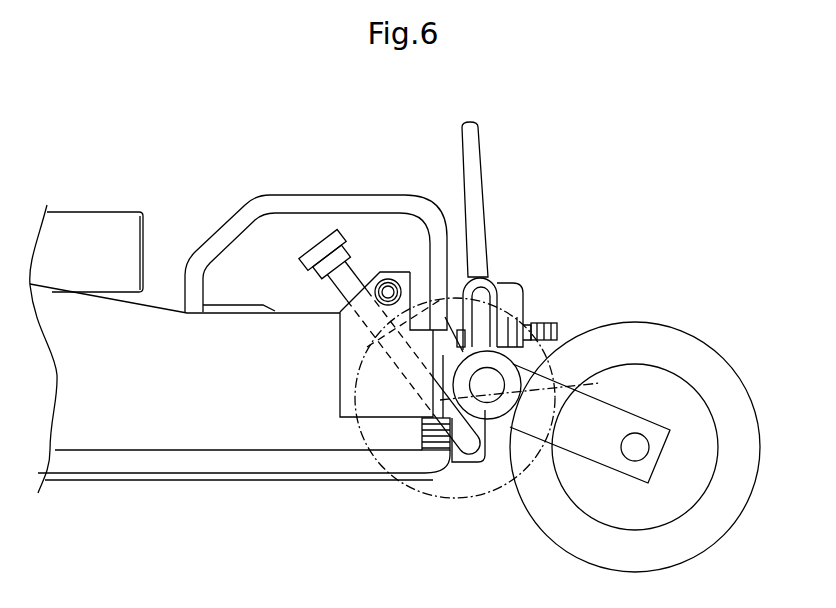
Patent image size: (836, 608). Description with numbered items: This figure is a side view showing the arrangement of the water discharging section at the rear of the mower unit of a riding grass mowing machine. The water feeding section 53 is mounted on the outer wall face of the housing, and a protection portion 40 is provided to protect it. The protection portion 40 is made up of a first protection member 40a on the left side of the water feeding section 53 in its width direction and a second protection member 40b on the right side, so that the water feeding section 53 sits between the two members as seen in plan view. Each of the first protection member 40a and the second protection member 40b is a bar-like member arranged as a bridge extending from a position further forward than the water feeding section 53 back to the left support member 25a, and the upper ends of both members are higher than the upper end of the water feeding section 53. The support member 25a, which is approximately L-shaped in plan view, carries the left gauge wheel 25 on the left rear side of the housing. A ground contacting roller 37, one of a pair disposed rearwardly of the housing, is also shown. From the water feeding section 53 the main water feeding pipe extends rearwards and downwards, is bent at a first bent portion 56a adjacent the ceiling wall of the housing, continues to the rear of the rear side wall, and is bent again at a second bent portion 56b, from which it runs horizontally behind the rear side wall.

The gauge wheel 25 is at (415, 493).
The support member 25a is at (340, 345).
The ground contacting roller 37 is at (670, 348).
The protection portion 40 is at (251, 168).
The first protection member 40a is at (210, 243).
The second protection member 40b is at (438, 228).
The water feeding section 53 is at (307, 243).
The first bent portion 56a is at (365, 380).
The second bent portion 56b is at (478, 452).